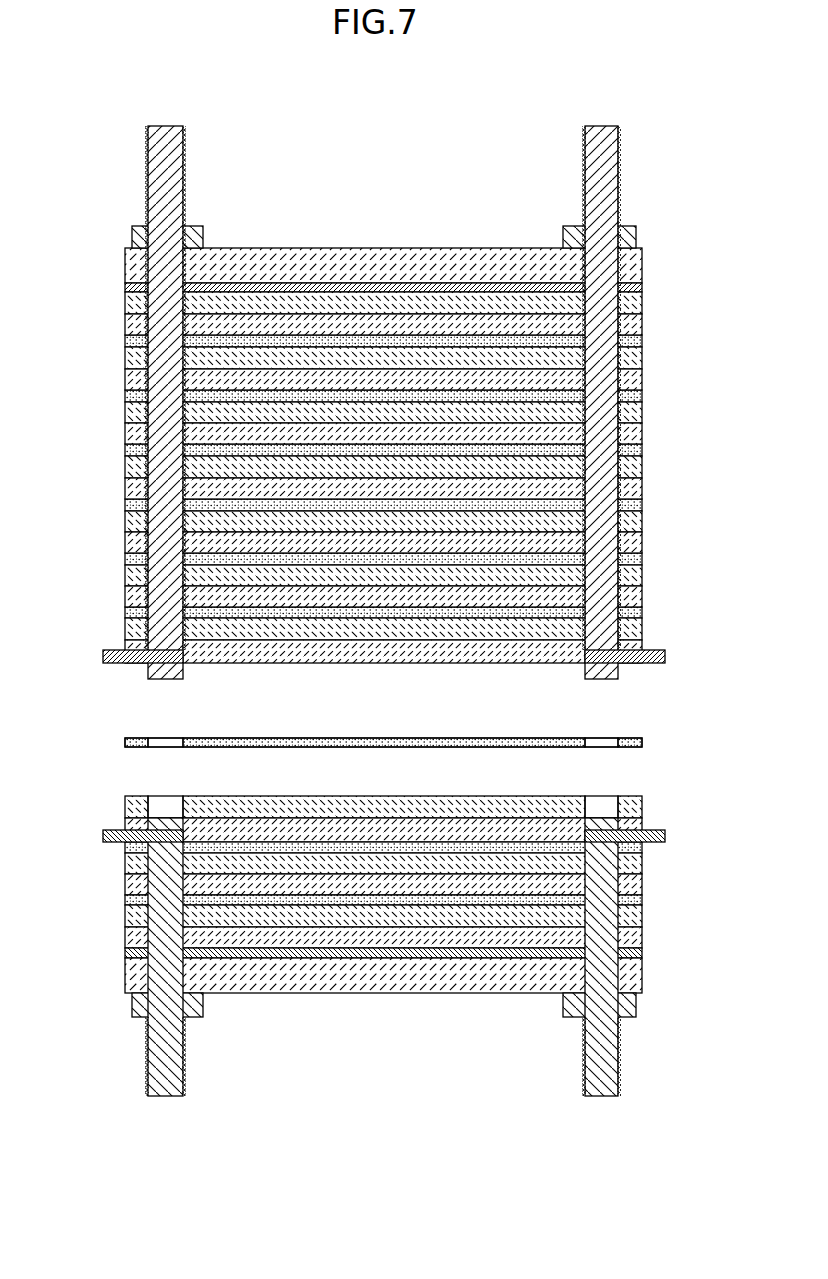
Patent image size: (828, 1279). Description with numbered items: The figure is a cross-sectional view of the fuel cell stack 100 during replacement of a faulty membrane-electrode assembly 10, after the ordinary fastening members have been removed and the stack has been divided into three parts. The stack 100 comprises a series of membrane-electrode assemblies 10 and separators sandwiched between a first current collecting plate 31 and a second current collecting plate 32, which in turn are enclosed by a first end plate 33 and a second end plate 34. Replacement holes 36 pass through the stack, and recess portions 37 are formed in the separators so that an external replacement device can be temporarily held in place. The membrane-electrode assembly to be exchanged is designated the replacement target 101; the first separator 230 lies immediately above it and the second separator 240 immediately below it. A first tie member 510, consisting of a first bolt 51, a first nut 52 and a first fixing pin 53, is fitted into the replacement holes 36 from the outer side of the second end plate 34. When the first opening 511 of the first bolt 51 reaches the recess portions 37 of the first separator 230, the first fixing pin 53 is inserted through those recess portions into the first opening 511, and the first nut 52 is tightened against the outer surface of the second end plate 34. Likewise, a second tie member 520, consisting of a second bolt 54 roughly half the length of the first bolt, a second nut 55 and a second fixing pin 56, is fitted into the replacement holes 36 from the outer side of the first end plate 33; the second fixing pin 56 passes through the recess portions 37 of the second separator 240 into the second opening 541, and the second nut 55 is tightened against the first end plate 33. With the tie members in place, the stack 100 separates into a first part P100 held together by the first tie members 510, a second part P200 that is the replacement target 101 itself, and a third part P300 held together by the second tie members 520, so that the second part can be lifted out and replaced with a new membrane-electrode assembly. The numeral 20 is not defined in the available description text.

The fuel cell stack 100 is at (406, 87).
The membrane-electrode assembly 10 is at (530, 365).
The lower plate assembly 20 is at (318, 960).
The first current collecting plate 31 is at (440, 956).
The second current collecting plate 32 is at (340, 282).
The first end plate 33 is at (492, 980).
The second end plate 34 is at (400, 265).
The replacement hole 36 is at (160, 372).
The recess portion 37 is at (128, 537).
The first bolt 51 is at (165, 183).
The first nut 52 is at (135, 232).
The first fixing pin 53 is at (107, 657).
The second bolt 54 is at (162, 1046).
The second nut 55 is at (132, 1005).
The second fixing pin 56 is at (103, 834).
The replacement target 101 is at (642, 742).
The first separator 230 is at (533, 663).
The second separator 240 is at (628, 806).
The first tie member 510 is at (148, 134).
The first opening 511 is at (165, 645).
The second tie member 520 is at (197, 1092).
The second opening 541 is at (165, 848).
The first part P100 is at (108, 433).
The second part P200 is at (108, 739).
The third part P300 is at (108, 931).